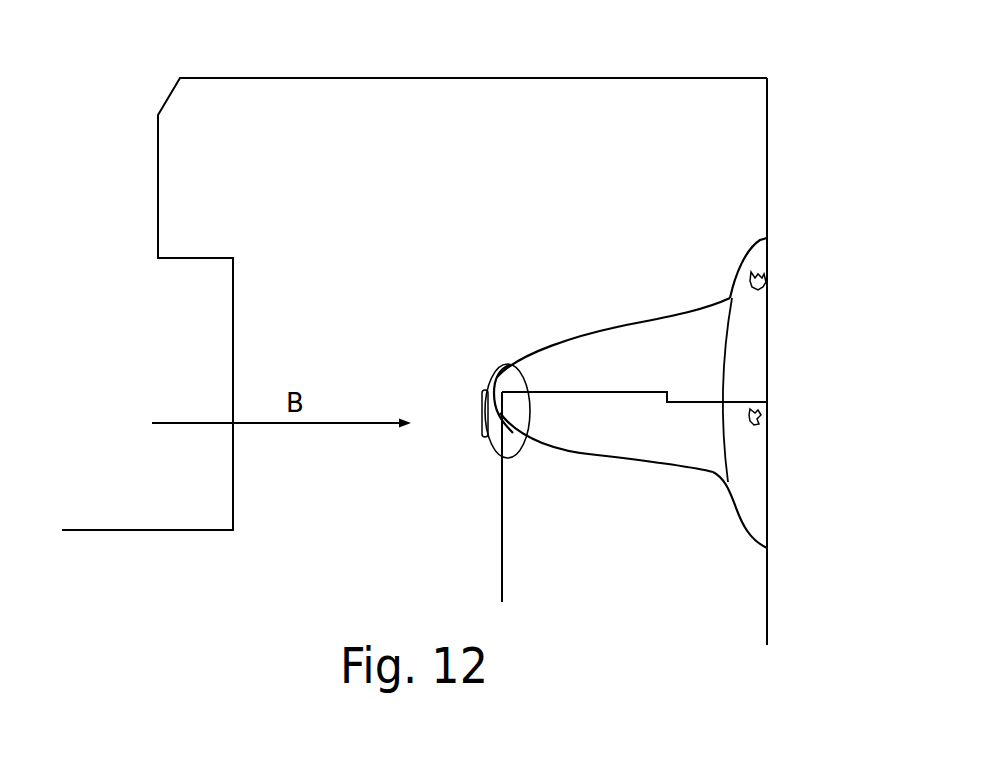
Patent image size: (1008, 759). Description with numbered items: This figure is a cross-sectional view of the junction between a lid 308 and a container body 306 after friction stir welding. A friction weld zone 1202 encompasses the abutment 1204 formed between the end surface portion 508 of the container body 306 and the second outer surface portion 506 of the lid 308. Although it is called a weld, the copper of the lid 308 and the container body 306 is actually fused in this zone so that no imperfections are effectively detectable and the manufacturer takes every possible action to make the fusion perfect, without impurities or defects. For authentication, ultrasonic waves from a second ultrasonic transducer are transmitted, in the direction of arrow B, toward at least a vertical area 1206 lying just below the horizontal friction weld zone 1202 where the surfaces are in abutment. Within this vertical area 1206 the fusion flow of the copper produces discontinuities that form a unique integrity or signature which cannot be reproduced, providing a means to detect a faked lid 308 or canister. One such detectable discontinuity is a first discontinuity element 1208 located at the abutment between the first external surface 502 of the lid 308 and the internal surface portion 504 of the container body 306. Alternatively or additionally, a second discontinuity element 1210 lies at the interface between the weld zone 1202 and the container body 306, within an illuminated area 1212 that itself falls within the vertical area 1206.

The container body 306 is at (753, 597).
The lid 308 is at (748, 132).
The first external surface 502 is at (502, 552).
The internal surface portion 504 is at (503, 567).
The second outer surface portion 506 is at (658, 406).
The end surface portion 508 is at (661, 404).
The friction weld zone 1202 is at (611, 322).
The abutment 1204 is at (598, 404).
The vertical area 1206 is at (473, 414).
The first discontinuity element 1208 is at (498, 438).
The second discontinuity element 1210 is at (522, 452).
The illuminated area 1212 is at (500, 362).